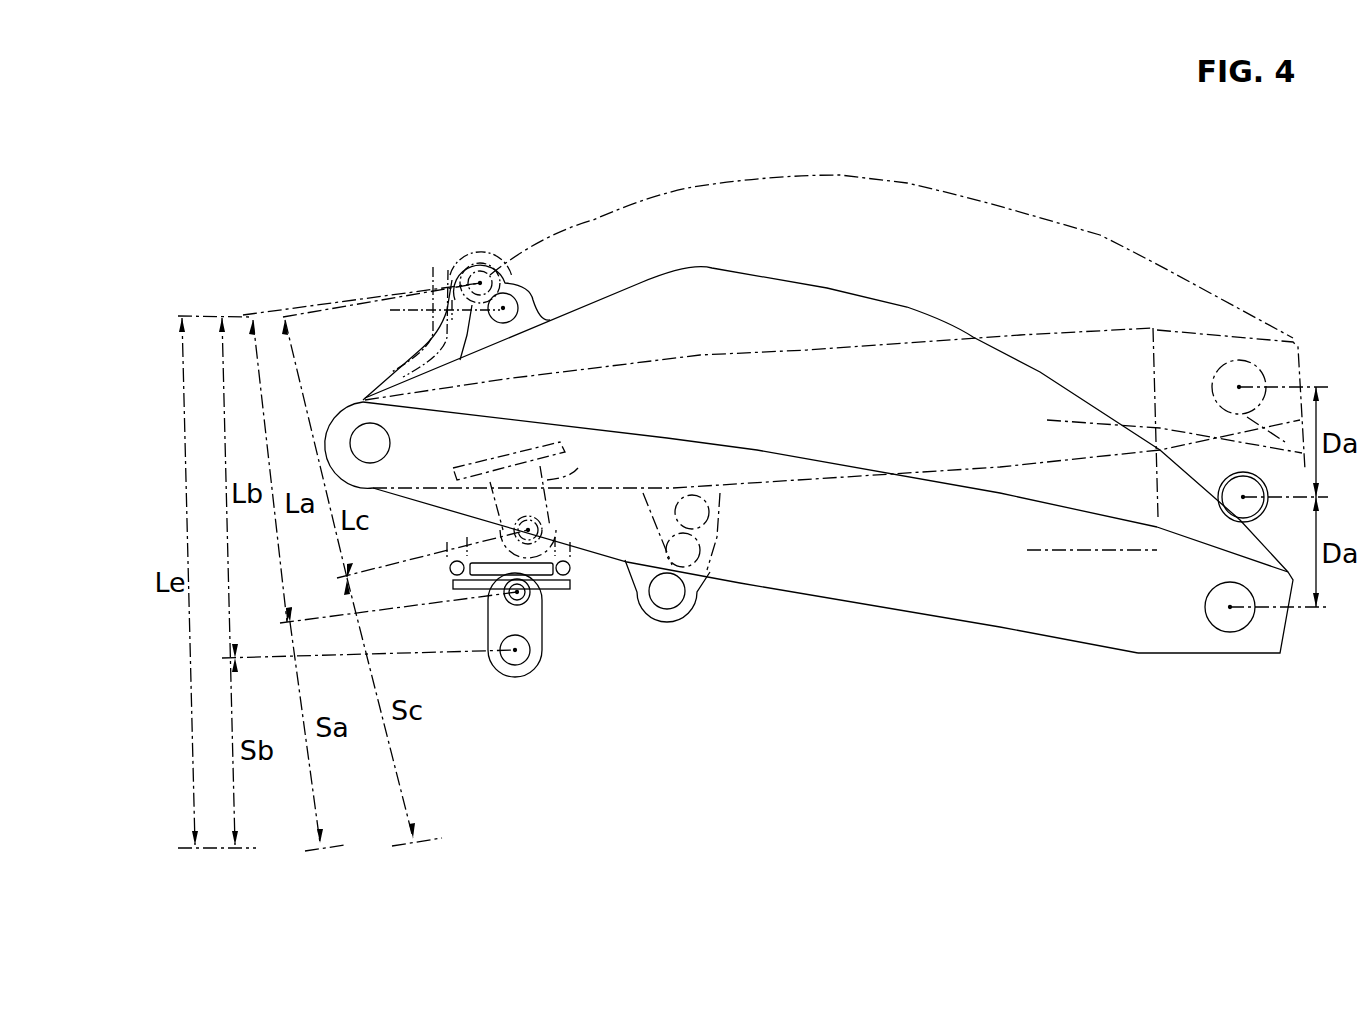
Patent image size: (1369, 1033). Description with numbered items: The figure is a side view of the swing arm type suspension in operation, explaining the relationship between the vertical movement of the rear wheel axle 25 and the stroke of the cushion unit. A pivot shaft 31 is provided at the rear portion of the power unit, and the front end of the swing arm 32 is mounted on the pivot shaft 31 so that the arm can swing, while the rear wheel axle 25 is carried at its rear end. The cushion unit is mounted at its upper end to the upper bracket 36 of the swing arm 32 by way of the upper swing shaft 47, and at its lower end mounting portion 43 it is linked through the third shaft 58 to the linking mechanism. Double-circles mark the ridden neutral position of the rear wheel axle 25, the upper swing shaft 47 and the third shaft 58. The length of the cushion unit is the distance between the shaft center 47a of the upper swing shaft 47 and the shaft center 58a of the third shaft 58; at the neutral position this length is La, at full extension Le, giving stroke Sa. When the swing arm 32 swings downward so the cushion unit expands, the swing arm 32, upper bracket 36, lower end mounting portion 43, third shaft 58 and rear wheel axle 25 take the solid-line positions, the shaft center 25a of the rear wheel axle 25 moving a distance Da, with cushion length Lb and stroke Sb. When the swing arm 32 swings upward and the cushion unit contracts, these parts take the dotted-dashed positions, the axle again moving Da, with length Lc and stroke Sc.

The rear wheel axle 25 is at (1232, 360).
The shaft center of the rear wheel axle 25a is at (1239, 387).
The pivot shaft 31 is at (350, 423).
The swing arm 32 is at (960, 185).
The upper bracket 36 is at (476, 270).
The lower end mounting portion 43 is at (578, 468).
The upper swing shaft 47 is at (455, 268).
The shaft center of the upper swing shaft 47a is at (513, 267).
The third shaft 58 is at (545, 526).
The shaft center of the third shaft 58a is at (530, 532).